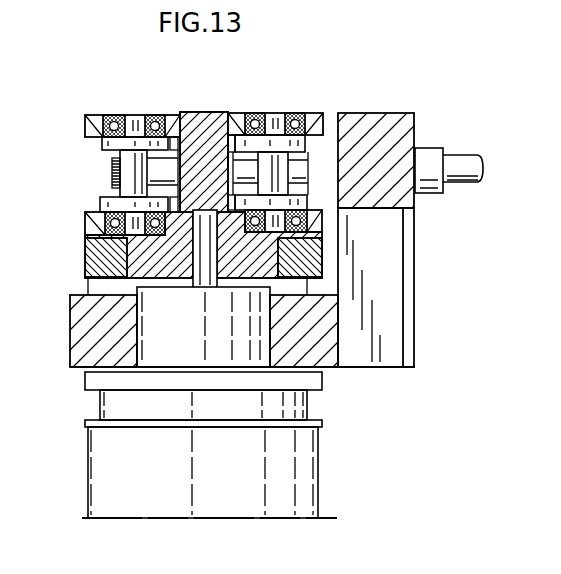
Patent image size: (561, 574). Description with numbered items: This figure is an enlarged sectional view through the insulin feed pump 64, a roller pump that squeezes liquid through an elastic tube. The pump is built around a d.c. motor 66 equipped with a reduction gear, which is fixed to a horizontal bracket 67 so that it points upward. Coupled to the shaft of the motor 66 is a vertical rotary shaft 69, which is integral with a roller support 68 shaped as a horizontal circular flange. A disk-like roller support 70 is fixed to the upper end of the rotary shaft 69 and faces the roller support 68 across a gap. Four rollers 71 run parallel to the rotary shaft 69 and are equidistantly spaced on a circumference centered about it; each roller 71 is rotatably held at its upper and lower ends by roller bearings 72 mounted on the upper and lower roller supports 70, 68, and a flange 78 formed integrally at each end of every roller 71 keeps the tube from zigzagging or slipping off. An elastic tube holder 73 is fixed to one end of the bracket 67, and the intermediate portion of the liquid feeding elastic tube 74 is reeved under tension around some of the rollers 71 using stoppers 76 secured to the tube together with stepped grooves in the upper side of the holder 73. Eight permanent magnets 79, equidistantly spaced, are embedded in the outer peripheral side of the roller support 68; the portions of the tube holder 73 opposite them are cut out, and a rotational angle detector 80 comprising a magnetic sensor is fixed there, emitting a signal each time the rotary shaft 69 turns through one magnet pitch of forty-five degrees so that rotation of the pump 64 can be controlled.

The insulin feed pump 64 is at (97, 97).
The d.c. motor 66 is at (95, 475).
The horizontal bracket 67 is at (72, 333).
The roller support 68 is at (85, 240).
The vertical rotary shaft 69 is at (225, 112).
The disk-like roller support 70 is at (86, 118).
The roller 71 is at (120, 192).
The roller bearing 72 is at (119, 114).
The elastic tube holder 73 is at (378, 118).
The liquid feeding elastic tube 74 is at (115, 167).
The stopper 76 is at (427, 155).
The flange 78 is at (105, 147).
The permanent magnet 79 is at (85, 257).
The rotational angle detector 80 is at (392, 260).